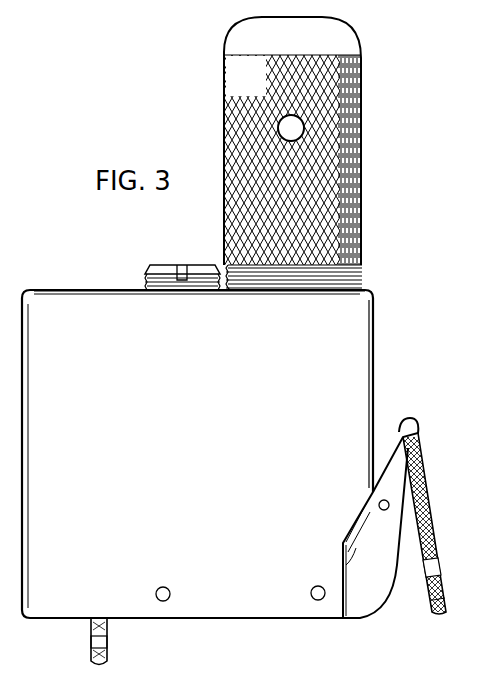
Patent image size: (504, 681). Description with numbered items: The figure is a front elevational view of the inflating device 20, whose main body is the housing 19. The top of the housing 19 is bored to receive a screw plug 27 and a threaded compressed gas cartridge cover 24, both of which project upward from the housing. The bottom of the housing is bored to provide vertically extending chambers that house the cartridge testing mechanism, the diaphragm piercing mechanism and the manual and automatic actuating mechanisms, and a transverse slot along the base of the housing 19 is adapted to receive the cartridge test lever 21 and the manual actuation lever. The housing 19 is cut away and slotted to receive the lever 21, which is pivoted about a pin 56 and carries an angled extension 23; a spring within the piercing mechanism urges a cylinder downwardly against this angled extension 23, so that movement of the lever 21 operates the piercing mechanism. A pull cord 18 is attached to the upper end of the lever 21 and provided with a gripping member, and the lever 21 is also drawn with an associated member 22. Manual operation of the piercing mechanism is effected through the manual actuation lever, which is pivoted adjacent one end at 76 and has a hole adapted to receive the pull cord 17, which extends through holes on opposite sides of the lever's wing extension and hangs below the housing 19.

The pull cord 17 is at (95, 656).
The pull cord 18 is at (447, 605).
The housing 19 is at (360, 336).
The inflating device 20 is at (67, 289).
The cartridge test lever 21 is at (403, 489).
The clip arm 22 is at (408, 428).
The angled extension 23 is at (352, 595).
The threaded compressed gas cartridge cover 24 is at (358, 112).
The screw plug 27 is at (197, 268).
The pin 56 is at (313, 587).
The pivot 76 is at (160, 587).